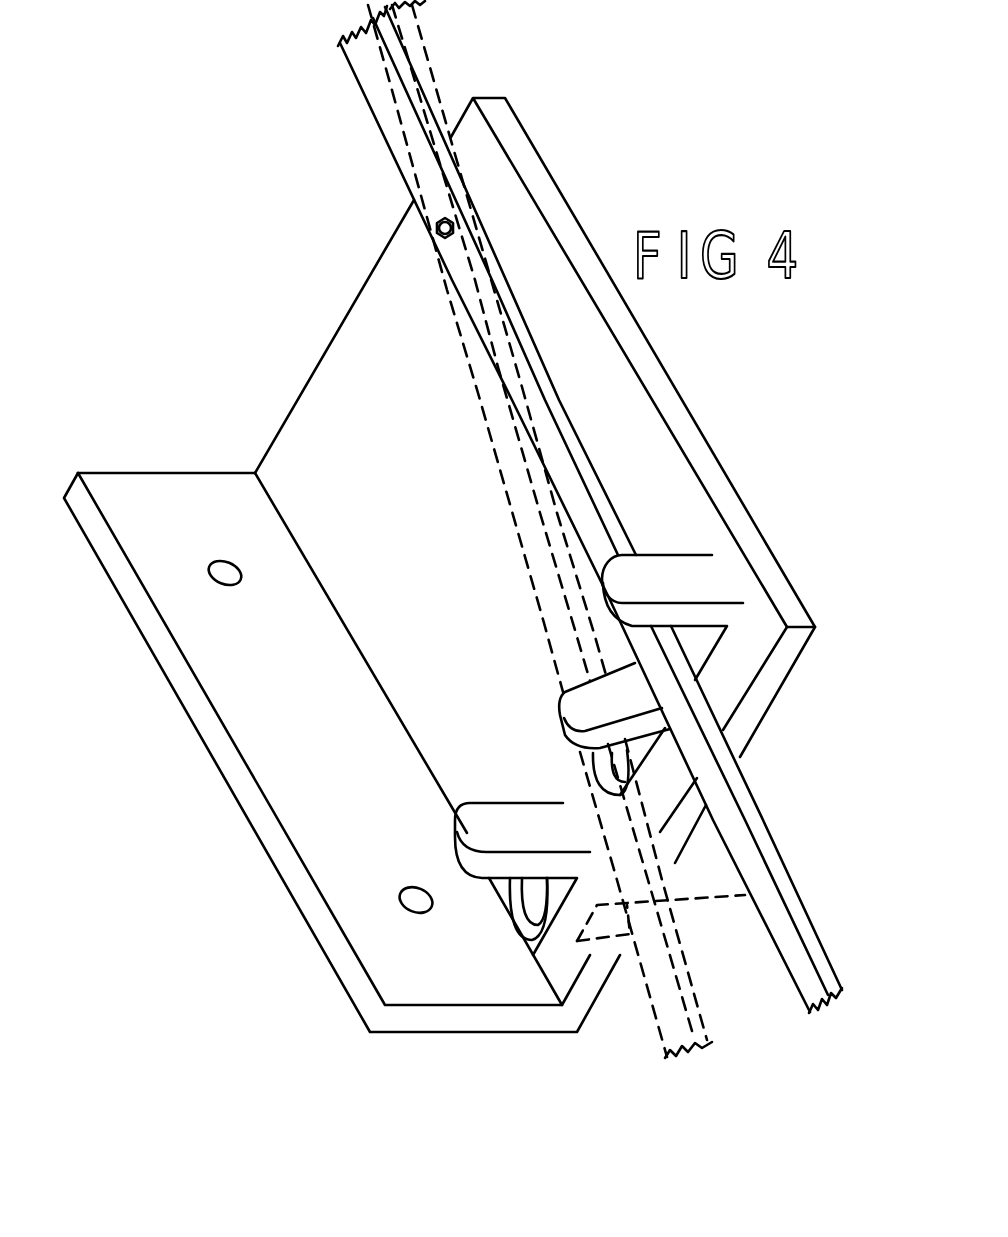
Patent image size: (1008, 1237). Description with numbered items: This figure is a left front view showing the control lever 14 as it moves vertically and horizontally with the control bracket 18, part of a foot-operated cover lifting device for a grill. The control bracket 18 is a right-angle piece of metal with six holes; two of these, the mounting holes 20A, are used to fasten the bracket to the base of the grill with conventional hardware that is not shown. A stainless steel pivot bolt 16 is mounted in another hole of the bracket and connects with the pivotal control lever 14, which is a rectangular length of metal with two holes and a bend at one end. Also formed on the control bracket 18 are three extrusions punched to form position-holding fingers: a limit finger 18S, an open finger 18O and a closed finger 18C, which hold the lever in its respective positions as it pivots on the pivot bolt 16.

The control lever 14 is at (718, 790).
The pivot bolt 16 is at (437, 228).
The control bracket 18 is at (440, 553).
The closed finger 18C is at (663, 578).
The open finger 18O is at (608, 710).
The limit finger 18S is at (507, 833).
The mounting holes 20A is at (222, 573).